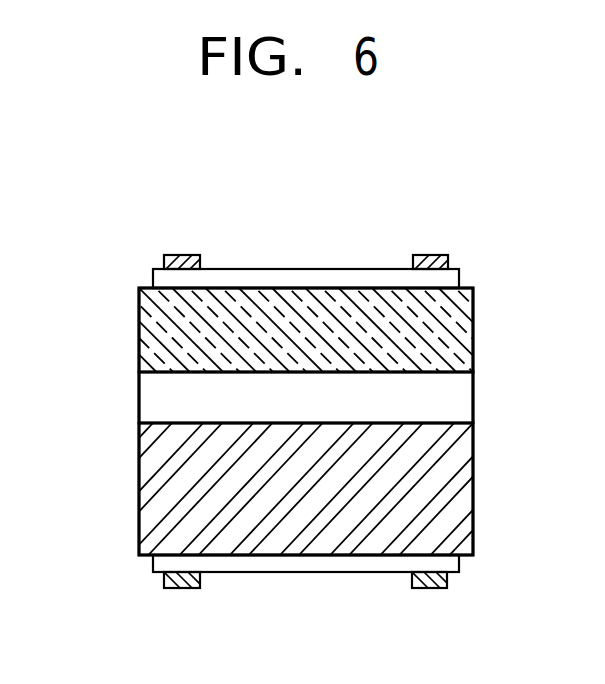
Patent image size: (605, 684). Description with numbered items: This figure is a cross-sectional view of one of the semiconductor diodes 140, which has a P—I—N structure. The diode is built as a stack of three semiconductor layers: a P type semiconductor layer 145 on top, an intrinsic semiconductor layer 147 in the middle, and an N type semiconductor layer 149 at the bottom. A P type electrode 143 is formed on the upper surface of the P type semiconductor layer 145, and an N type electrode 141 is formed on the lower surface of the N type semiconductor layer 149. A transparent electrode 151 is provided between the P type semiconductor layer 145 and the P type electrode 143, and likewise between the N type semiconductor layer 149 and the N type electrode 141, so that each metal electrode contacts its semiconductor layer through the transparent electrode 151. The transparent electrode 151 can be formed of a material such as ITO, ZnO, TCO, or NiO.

The semiconductor diode 140 is at (110, 272).
The N type electrode 141 is at (182, 590).
The P type electrode 143 is at (182, 255).
The P type semiconductor layer 145 is at (463, 338).
The intrinsic semiconductor layer 147 is at (463, 397).
The N type semiconductor layer 149 is at (462, 498).
The transparent electrode 151 is at (459, 282).